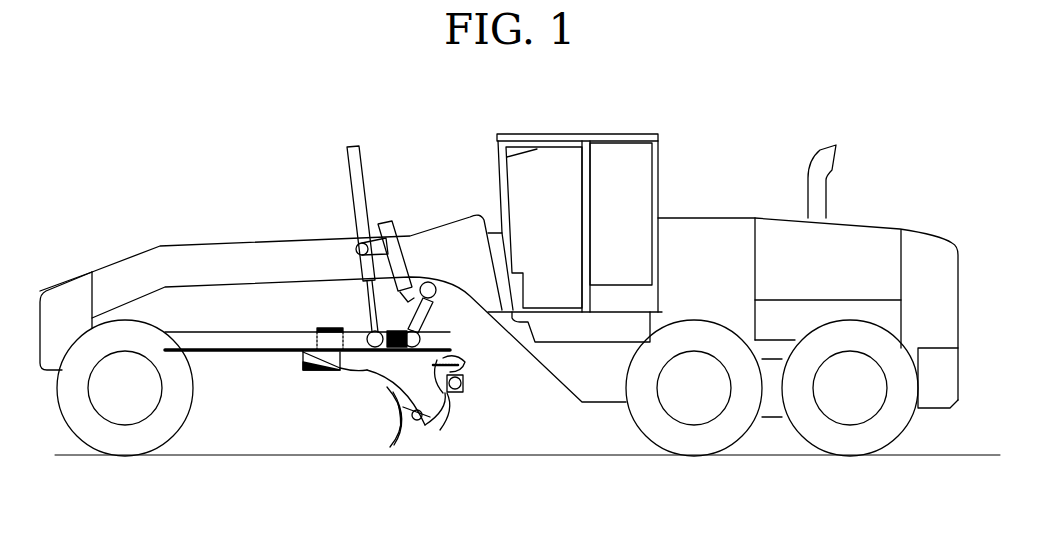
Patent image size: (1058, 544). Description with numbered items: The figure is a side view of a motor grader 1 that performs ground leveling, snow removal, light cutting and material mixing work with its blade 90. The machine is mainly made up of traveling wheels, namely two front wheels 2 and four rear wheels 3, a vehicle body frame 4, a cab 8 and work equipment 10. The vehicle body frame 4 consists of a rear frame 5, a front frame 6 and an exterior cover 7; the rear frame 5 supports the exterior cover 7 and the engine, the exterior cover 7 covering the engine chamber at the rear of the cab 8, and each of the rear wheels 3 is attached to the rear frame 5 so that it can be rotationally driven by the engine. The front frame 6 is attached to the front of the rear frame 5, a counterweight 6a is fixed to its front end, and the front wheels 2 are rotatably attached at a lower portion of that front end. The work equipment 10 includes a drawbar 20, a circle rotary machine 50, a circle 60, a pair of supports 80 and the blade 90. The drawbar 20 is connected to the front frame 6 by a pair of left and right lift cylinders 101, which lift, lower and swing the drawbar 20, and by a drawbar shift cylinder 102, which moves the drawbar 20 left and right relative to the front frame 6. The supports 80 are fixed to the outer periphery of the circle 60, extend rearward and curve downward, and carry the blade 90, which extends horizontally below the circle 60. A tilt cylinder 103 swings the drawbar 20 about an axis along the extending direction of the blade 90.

The motor grader 1 is at (190, 122).
The front wheels 2 is at (85, 433).
The rear wheels 3 is at (718, 438).
The vehicle body frame 4 is at (446, 213).
The rear frame 5 is at (588, 385).
The front frame 6 is at (265, 245).
The counterweight 6a is at (57, 300).
The exterior cover 7 is at (850, 245).
The cab 8 is at (565, 136).
The work equipment 10 is at (272, 428).
The drawbar 20 is at (244, 331).
The circle rotary machine 50 is at (331, 328).
The circle 60 is at (455, 385).
The supports 80 is at (367, 369).
The blade 90 is at (390, 418).
The lift cylinders 101 is at (352, 188).
The drawbar shift cylinder 102 is at (422, 322).
The tilt cylinder 103 is at (442, 405).